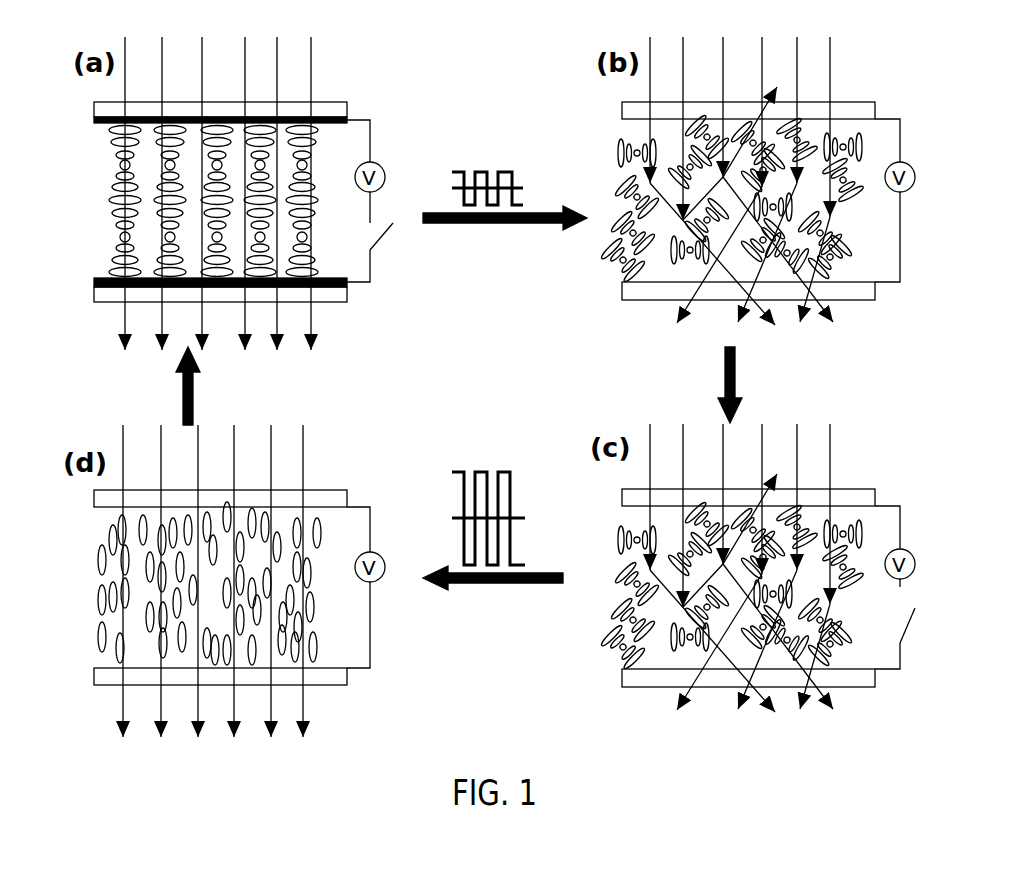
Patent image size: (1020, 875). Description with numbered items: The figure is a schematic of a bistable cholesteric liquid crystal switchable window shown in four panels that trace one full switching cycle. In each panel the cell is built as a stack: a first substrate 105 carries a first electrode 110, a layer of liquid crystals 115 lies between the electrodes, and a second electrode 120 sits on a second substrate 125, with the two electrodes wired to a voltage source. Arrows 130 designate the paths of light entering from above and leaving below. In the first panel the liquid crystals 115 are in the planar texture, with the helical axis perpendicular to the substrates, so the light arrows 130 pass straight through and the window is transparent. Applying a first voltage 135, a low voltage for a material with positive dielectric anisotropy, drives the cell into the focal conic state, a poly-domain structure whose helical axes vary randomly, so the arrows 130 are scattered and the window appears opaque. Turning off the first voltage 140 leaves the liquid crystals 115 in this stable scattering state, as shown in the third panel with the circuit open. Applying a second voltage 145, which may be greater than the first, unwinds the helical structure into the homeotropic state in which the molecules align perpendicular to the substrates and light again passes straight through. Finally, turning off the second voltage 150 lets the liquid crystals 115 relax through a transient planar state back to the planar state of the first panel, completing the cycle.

The first substrate 105 is at (94, 109).
The first electrode 110 is at (94, 122).
The liquid crystals 115 is at (116, 200).
The second electrode 120 is at (98, 280).
The second substrate 125 is at (94, 296).
The arrows designating paths of light 130 is at (312, 57).
The applying a first voltage 135 is at (497, 225).
The turning off the first voltage 140 is at (742, 378).
The applying a second voltage 145 is at (500, 588).
The turning off the second voltage 150 is at (198, 392).